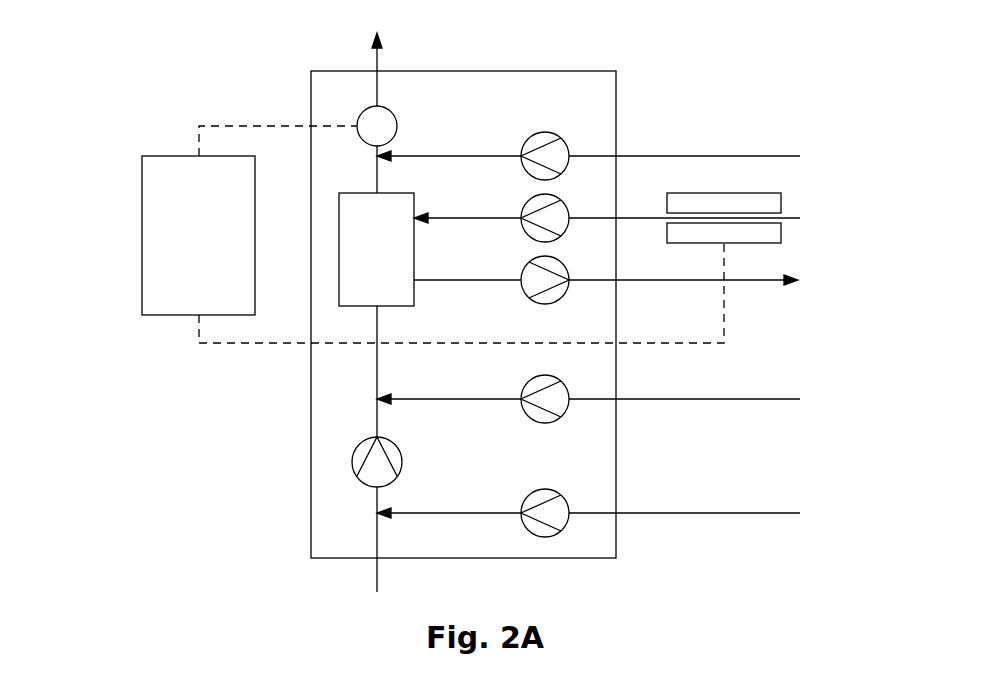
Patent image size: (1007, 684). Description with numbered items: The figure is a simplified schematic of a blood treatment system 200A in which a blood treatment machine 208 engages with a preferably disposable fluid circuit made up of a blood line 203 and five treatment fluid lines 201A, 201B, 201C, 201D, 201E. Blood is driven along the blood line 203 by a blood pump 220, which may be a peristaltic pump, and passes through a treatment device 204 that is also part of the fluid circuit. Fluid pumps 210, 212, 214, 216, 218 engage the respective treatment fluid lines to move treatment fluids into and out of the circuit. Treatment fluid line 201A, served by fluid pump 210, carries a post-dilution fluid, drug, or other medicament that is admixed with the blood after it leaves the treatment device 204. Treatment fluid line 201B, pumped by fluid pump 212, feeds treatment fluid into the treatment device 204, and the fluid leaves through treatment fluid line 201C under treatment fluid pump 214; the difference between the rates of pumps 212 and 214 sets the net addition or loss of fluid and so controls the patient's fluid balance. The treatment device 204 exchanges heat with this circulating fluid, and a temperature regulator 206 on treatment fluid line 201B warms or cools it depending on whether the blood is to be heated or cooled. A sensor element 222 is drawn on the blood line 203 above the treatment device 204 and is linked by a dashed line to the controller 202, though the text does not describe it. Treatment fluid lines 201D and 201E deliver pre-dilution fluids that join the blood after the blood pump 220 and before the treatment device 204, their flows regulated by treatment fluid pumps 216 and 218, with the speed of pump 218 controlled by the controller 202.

The blood treatment system 200A is at (454, 334).
The treatment fluid line 201A is at (588, 125).
The treatment fluid line 201B is at (636, 188).
The treatment fluid line 201C is at (623, 310).
The treatment fluid line 201D is at (590, 429).
The treatment fluid line 201E is at (588, 544).
The controller 202 is at (172, 276).
The blood line 203 is at (332, 334).
The treatment device 204 is at (331, 301).
The temperature regulator 206 is at (724, 161).
The blood treatment machine 208 is at (463, 314).
The fluid pump 210 is at (599, 106).
The fluid pump 212 is at (596, 258).
The treatment fluid pump 214 is at (593, 322).
The treatment fluid pump 216 is at (596, 435).
The treatment fluid pump 218 is at (591, 557).
The blood pump 220 is at (317, 492).
The temperature sensor 222 is at (305, 92).